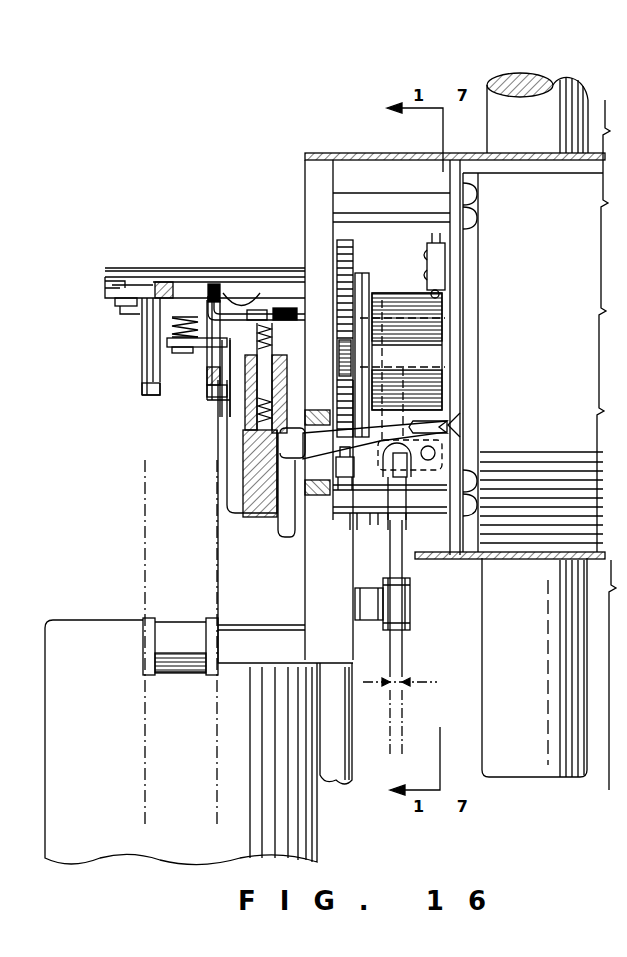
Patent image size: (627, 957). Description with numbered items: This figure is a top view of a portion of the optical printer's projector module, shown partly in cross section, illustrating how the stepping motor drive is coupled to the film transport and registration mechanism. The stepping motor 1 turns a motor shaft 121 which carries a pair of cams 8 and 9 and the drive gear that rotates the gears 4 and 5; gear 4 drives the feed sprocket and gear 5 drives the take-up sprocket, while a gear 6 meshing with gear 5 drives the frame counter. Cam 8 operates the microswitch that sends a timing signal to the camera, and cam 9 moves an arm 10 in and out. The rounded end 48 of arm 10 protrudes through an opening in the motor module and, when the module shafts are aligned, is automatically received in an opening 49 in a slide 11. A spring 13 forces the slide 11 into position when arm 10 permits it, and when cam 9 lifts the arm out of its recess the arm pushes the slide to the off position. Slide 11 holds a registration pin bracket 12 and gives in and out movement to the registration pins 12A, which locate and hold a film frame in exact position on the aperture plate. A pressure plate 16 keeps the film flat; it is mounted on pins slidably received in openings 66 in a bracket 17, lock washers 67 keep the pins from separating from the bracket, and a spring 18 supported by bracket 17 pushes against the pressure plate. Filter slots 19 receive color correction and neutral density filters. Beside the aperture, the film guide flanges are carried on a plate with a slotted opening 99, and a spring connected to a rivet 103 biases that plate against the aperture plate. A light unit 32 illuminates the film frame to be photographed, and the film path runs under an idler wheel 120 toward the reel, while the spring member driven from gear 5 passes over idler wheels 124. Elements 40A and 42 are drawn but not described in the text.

The stepping motor 1 is at (545, 252).
The gear 4 is at (330, 441).
The gear 5 is at (346, 246).
The gear 6 is at (336, 345).
The cam 8 is at (386, 300).
The cam 9 is at (362, 275).
The arm 10 is at (349, 462).
The slide 11 is at (277, 523).
The registration pin bracket 12 is at (243, 322).
The registration pins 12A is at (203, 300).
The spring 13 is at (262, 404).
The pressure plate 16 is at (108, 289).
The bracket 17 is at (163, 345).
The spring 18 is at (173, 327).
The filter slots 19 is at (150, 284).
The light unit 32 is at (98, 767).
The block 40A is at (541, 687).
The bearing 42 is at (222, 398).
The rounded end 48 is at (280, 443).
The opening 49 is at (288, 425).
The openings 66 is at (185, 353).
The lock washers 67 is at (167, 348).
The slotted opening 99 is at (112, 288).
The rivet 103 is at (130, 315).
The idler wheel 120 is at (148, 638).
The motor shaft 121 is at (413, 338).
The idler wheels 124 is at (410, 590).